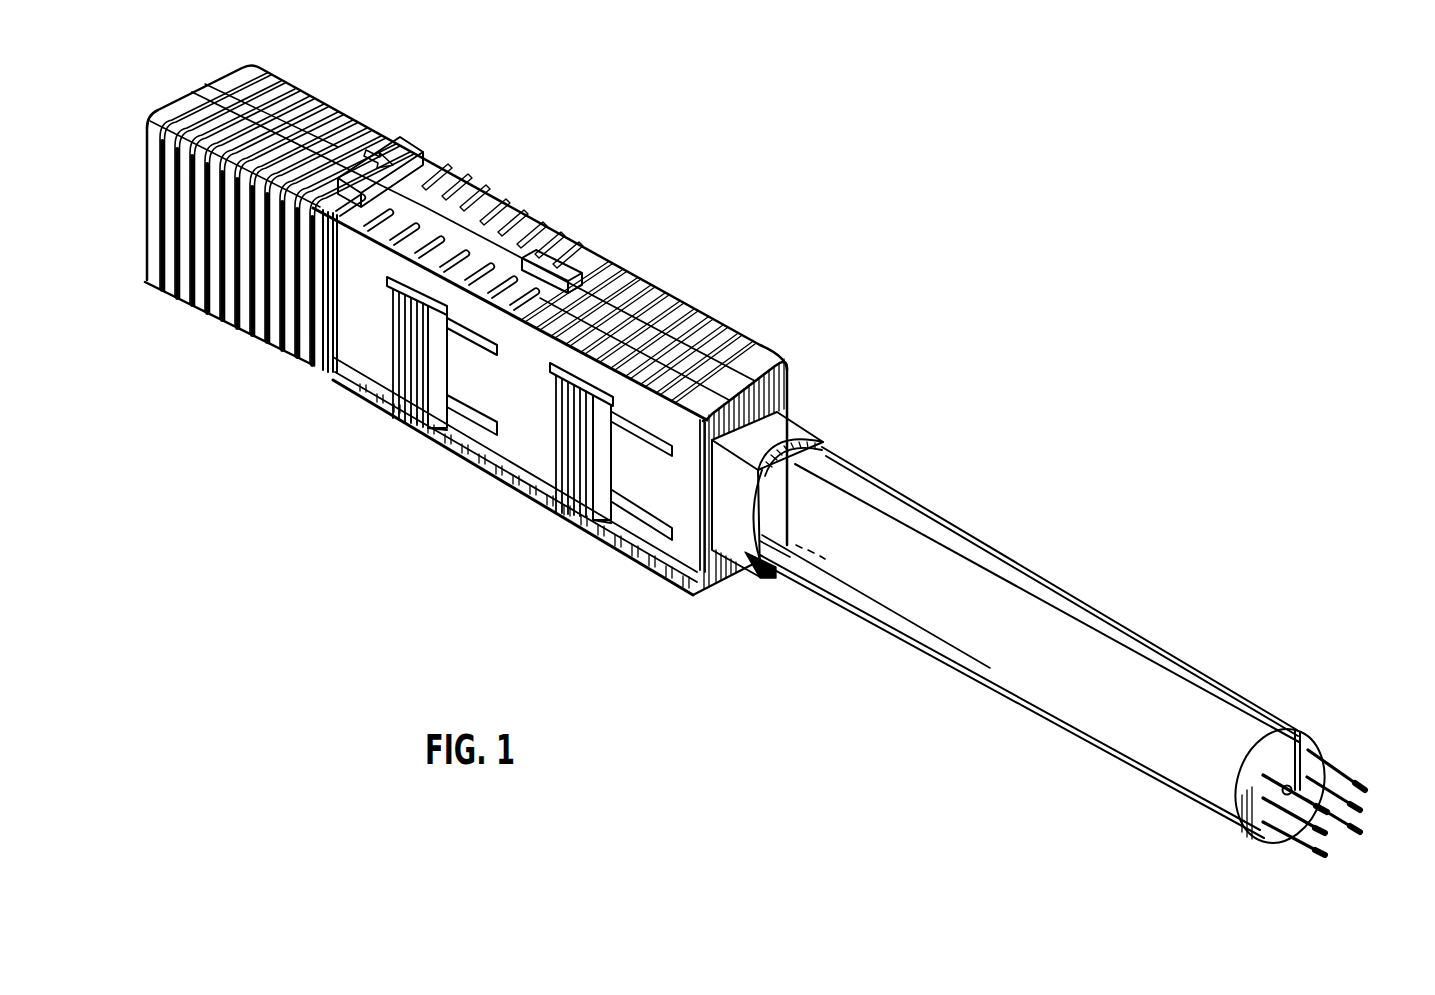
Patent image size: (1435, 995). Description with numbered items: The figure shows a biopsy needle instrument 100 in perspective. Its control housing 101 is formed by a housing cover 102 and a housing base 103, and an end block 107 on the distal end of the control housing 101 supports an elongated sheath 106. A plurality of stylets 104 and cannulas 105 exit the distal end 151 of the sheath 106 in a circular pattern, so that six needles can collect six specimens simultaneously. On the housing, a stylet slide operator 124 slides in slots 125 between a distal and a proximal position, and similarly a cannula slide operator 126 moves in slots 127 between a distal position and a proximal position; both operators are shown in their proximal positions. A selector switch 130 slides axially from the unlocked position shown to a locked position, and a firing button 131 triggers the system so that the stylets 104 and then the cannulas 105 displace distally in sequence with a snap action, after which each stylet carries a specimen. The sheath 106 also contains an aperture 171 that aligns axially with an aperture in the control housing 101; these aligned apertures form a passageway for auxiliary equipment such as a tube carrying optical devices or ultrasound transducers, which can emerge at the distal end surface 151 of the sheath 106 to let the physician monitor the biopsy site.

The biopsy needle instrument 100 is at (563, 211).
The control housing 101 is at (752, 310).
The housing cover 102 is at (147, 210).
The housing base 103 is at (315, 84).
The stylets 104 is at (1360, 790).
The cannulas 105 is at (1338, 752).
The sheath 106 is at (1045, 587).
The end block 107 is at (822, 440).
The stylet slide operator 124 is at (388, 380).
The slots 125 is at (480, 356).
The cannula slide operator 126 is at (552, 490).
The slots 127 is at (631, 510).
The selector switch 130 is at (582, 262).
The firing button 131 is at (407, 148).
The distal end of the sheath 151 is at (1302, 753).
The aperture 171 is at (1285, 785).